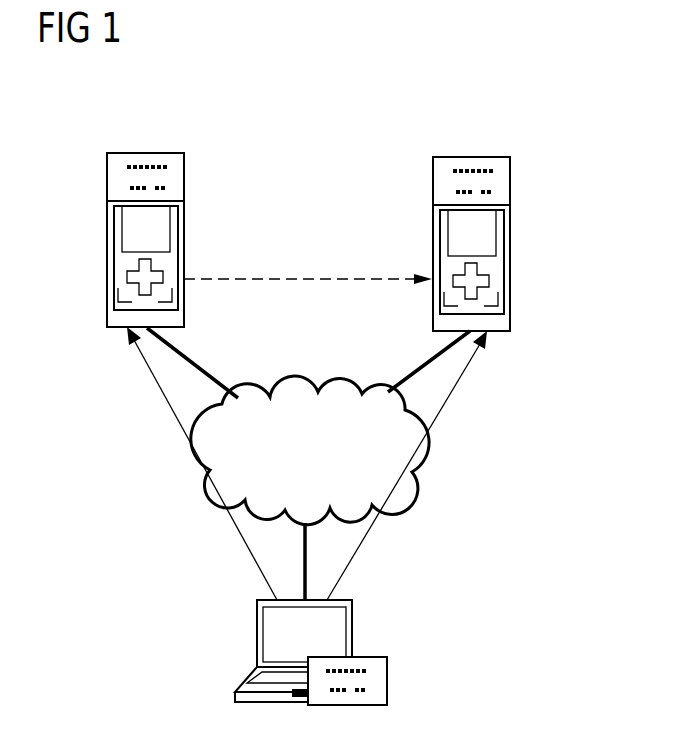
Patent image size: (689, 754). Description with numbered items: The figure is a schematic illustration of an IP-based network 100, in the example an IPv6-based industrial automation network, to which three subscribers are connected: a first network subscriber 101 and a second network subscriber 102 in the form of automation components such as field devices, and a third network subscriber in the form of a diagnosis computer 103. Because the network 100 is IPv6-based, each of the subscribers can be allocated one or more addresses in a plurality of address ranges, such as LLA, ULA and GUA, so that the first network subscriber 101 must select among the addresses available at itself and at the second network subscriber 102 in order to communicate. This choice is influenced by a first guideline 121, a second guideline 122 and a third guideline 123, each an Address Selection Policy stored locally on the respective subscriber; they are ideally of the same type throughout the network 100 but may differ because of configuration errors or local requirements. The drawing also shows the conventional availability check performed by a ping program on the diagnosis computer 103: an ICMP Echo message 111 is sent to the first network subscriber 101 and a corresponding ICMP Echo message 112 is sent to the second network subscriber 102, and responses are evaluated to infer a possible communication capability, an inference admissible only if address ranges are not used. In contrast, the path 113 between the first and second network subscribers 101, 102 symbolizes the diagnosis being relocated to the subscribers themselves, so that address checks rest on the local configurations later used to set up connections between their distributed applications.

The IP-based network 100 is at (294, 389).
The first network subscriber 101 is at (109, 215).
The second network subscriber 102 is at (510, 218).
The diagnosis computer 103 is at (257, 635).
The ICMP Echo message 111 is at (247, 540).
The ICMP Echo message 112 is at (370, 537).
The path 113 is at (293, 279).
The first guideline 121 is at (148, 153).
The second guideline 122 is at (474, 157).
The third guideline 123 is at (387, 680).